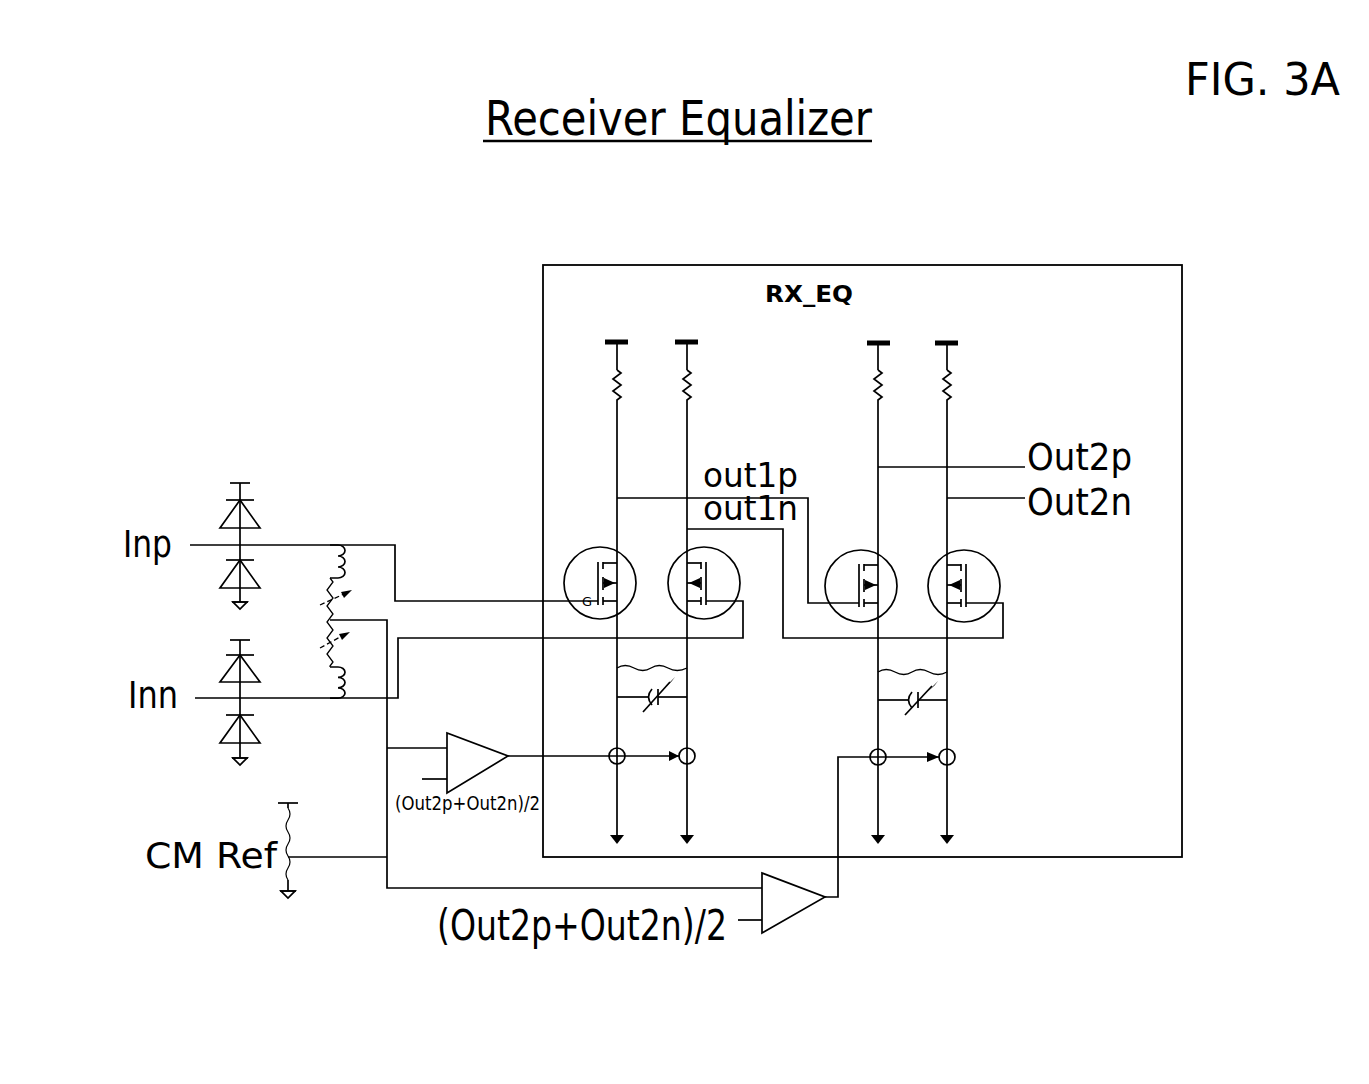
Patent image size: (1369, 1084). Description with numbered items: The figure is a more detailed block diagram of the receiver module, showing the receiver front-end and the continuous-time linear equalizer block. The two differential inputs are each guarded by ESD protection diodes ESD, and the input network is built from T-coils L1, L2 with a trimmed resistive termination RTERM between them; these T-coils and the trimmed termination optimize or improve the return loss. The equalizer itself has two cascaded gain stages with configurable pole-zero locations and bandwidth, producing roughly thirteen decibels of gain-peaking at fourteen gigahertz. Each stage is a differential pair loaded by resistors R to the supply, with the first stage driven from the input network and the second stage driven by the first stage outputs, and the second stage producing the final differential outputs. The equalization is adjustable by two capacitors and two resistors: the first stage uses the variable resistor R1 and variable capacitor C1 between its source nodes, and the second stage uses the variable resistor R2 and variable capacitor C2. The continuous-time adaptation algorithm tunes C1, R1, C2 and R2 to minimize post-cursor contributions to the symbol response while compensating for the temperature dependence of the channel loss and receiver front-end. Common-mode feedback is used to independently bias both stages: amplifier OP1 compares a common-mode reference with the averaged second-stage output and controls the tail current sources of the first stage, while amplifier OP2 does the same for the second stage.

The ESD protection diodes ESD is at (279, 621).
The T-coil inductor L1 is at (324, 562).
The T-coil inductor L2 is at (322, 681).
The trimmed resistive termination RTERM is at (318, 622).
The load resistor R is at (766, 392).
The first equalizer resistor R1 is at (679, 670).
The first equalizer capacitor C1 is at (679, 703).
The second equalizer resistor R2 is at (943, 669).
The second equalizer capacitor C2 is at (943, 705).
The first common-mode feedback amplifier OP1 is at (475, 742).
The second common-mode feedback amplifier OP2 is at (793, 892).